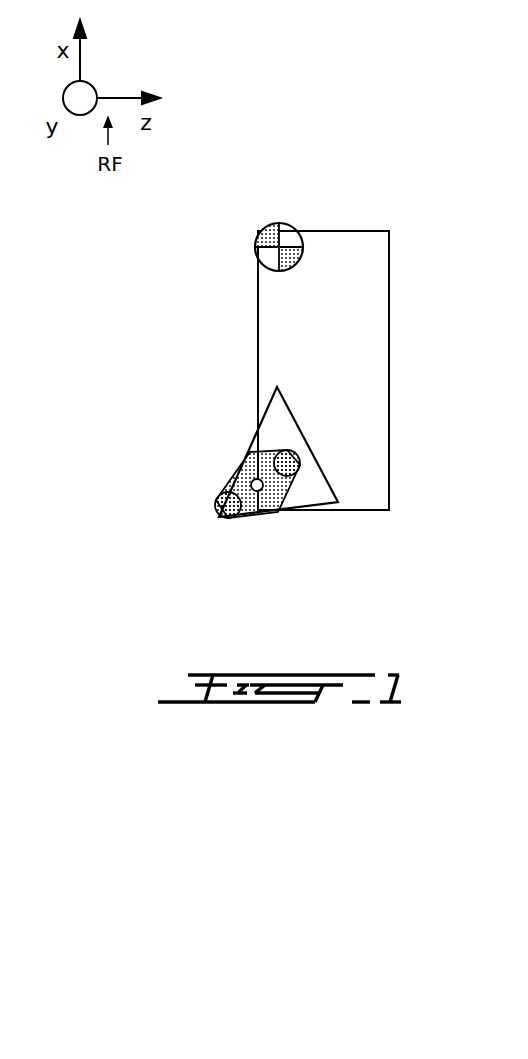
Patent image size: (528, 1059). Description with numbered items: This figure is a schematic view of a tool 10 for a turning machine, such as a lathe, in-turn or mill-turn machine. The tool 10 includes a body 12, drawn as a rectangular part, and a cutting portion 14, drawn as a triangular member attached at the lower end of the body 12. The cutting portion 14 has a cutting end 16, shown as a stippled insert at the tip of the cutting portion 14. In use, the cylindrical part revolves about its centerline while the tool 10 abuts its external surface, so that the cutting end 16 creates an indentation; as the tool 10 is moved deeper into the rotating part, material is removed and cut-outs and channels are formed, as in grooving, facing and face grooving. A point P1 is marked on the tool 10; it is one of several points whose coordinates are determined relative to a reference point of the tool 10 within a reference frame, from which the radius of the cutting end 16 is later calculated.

The tool 10 is at (385, 198).
The body 12 is at (390, 337).
The cutting portion 14 is at (292, 534).
The cutting end 16 is at (204, 524).
The point of the cutting end P1 is at (263, 228).